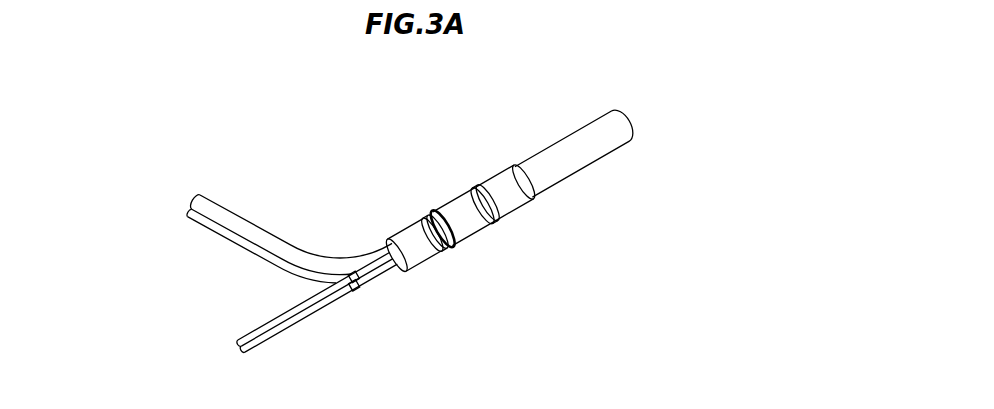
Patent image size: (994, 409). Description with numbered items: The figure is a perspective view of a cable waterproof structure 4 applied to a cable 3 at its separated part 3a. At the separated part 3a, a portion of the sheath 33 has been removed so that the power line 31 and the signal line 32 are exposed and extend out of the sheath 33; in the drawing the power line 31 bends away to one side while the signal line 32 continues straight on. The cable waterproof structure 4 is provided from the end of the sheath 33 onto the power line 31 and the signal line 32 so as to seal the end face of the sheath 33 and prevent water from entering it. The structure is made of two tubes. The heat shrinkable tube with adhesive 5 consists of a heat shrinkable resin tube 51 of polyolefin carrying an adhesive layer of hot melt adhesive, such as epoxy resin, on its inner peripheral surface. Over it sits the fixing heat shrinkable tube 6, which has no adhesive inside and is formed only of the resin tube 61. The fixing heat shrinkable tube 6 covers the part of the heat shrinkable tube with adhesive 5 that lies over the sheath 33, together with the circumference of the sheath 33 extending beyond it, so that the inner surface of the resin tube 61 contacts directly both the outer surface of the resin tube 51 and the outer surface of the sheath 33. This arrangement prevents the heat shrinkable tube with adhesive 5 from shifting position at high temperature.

The cable 3 is at (402, 212).
The sheath 33 is at (613, 145).
The separated part 3a is at (374, 275).
The power line 31 is at (243, 235).
The signal line 32 is at (272, 327).
The cable waterproof structure 4 is at (406, 176).
The heat shrinkable tube with adhesive 5 is at (318, 217).
The resin tube 51 is at (446, 251).
The fixing heat shrinkable tube 6 is at (622, 218).
The resin tube 61 is at (477, 225).